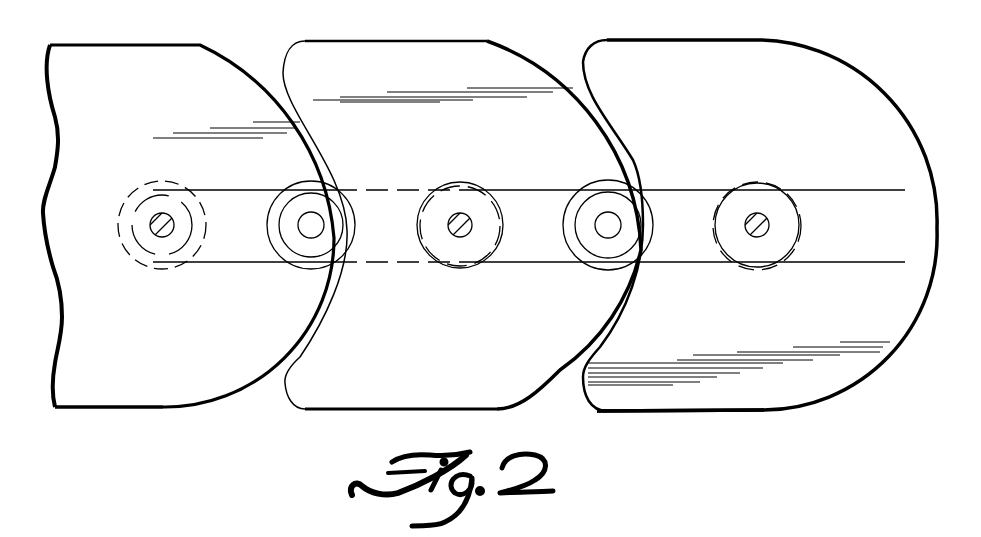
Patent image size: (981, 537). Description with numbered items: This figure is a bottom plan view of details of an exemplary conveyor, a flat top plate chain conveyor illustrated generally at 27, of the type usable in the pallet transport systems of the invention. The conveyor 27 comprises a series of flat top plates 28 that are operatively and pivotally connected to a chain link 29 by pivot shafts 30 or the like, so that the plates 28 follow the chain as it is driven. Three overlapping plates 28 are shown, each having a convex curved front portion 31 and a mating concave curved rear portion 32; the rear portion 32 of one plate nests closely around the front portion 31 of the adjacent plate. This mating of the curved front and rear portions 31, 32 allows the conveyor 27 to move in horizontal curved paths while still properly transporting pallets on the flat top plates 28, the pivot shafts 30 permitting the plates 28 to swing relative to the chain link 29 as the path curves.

The flat top plate chain conveyor 27 is at (810, 424).
The flat top plates 28 is at (119, 398).
The chain link 29 is at (545, 195).
The pivot shafts 30 is at (465, 238).
The curved front portion 31 is at (532, 65).
The curved rear portion 32 is at (283, 76).